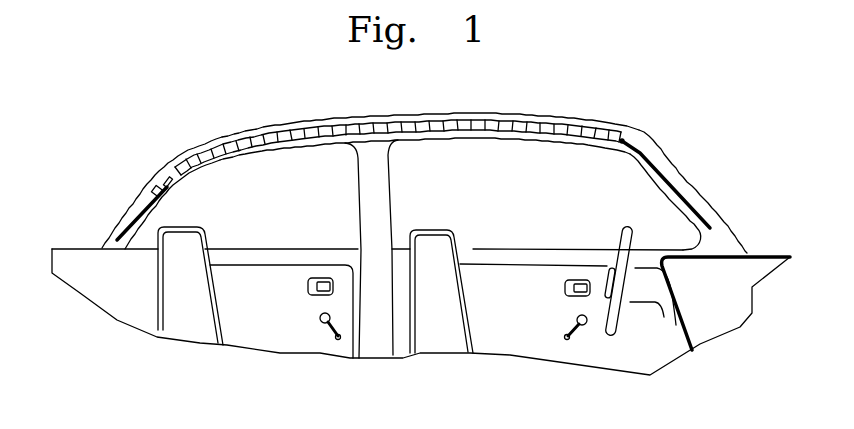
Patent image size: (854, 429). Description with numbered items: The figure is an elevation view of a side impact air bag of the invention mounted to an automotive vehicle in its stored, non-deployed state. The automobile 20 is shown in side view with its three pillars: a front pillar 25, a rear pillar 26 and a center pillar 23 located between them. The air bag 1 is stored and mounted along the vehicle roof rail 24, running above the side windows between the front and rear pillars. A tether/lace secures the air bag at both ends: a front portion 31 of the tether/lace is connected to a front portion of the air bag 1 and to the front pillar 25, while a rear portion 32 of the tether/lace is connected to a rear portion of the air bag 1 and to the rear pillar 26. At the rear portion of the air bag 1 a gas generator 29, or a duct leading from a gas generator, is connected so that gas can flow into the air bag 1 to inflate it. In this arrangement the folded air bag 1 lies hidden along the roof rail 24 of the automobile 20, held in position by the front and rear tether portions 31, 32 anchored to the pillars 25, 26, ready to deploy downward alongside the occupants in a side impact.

The air bag 1 is at (292, 127).
The automobile 20 is at (190, 348).
The center pillar 23 is at (380, 312).
The vehicle roof rail 24 is at (518, 115).
The front pillar 25 is at (722, 240).
The rear pillar 26 is at (108, 243).
The gas generator 29 is at (153, 187).
The front portion of tether/lace 31 is at (653, 161).
The rear portion of tether/lace 32 is at (150, 210).